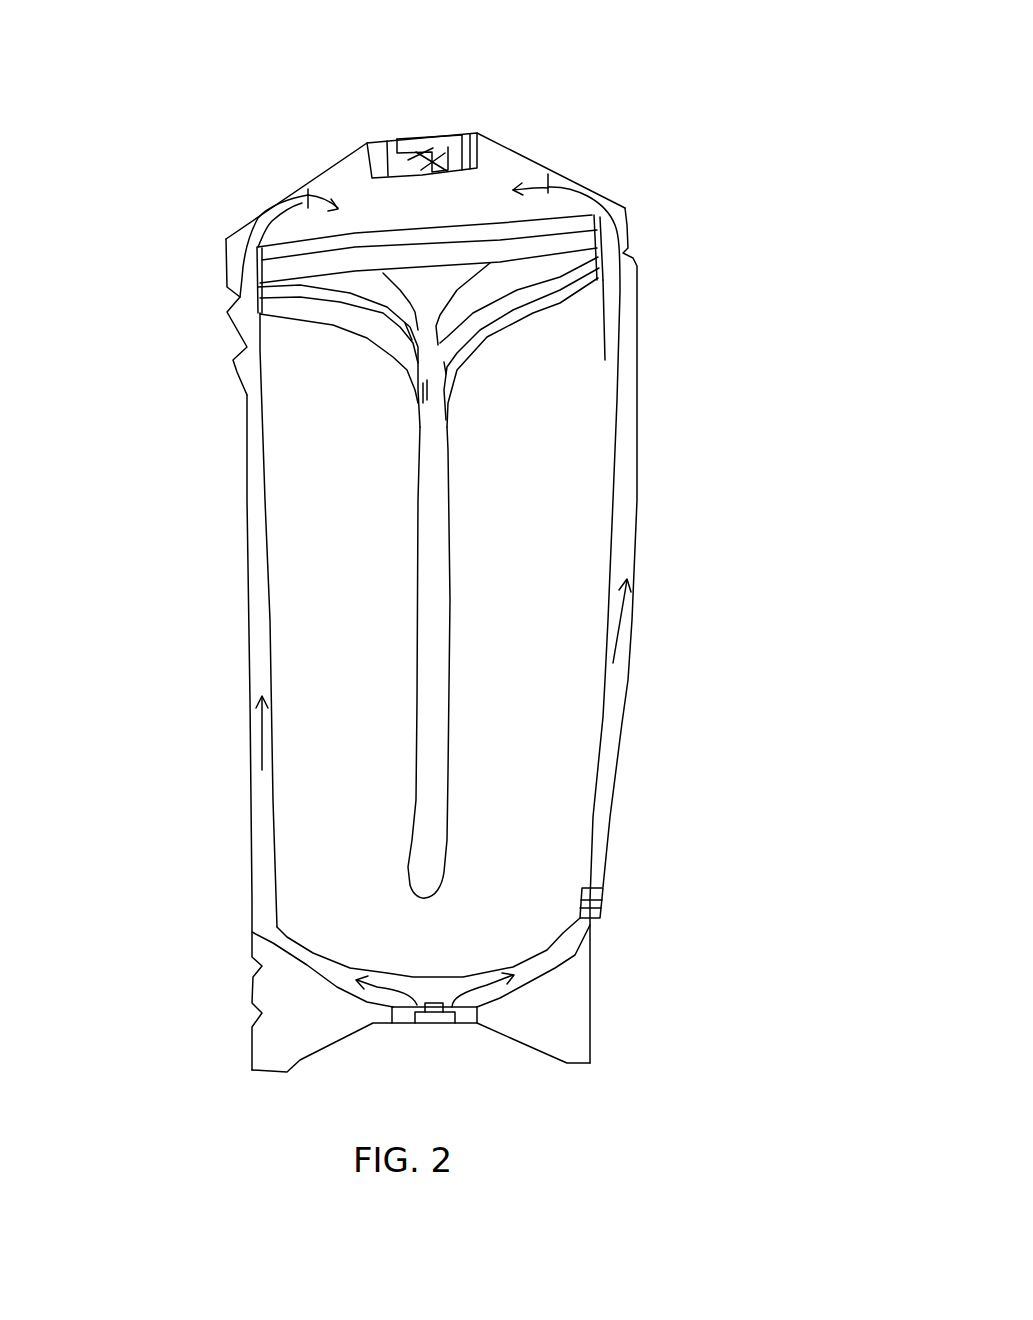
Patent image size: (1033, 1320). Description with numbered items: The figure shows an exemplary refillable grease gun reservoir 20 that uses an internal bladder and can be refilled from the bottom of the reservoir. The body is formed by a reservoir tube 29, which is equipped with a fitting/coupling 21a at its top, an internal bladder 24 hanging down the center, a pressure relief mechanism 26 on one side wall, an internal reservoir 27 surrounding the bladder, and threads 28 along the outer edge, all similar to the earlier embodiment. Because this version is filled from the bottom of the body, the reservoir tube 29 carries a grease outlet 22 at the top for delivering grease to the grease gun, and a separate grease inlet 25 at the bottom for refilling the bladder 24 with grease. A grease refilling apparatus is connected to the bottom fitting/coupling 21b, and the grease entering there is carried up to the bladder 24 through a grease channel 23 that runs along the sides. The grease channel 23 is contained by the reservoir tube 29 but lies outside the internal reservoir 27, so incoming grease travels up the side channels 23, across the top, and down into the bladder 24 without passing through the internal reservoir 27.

The reservoir 20 is at (519, 561).
The fitting/coupling 21a is at (368, 132).
The fitting/coupling 21b is at (396, 1028).
The grease outlet 22 is at (423, 130).
The grease channel 23 is at (250, 385).
The internal bladder 24 is at (450, 580).
The grease inlet 25 is at (427, 1043).
The pressure relief mechanism 26 is at (607, 902).
The internal reservoir 27 is at (323, 737).
The threads 28 is at (220, 323).
The reservoir tube 29 is at (247, 553).